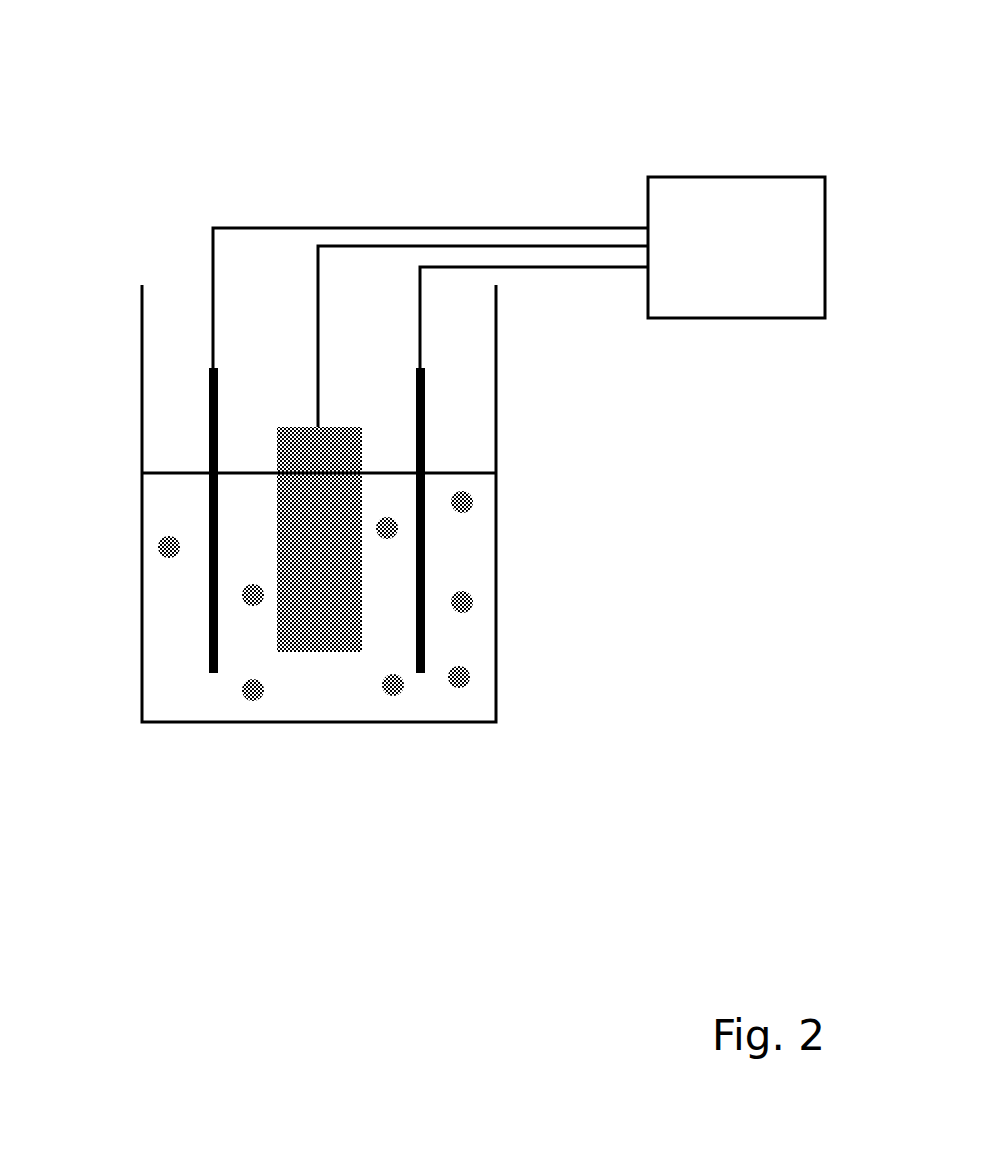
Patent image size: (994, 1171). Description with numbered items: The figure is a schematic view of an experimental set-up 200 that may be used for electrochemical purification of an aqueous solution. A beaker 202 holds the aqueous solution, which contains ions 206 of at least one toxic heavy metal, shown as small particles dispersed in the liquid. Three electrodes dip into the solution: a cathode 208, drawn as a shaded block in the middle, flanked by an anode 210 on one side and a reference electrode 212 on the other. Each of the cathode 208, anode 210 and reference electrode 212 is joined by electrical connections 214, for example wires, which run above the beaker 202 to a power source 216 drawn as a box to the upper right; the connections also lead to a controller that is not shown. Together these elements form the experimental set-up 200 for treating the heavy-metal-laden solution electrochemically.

The experimental set-up 200 is at (213, 124).
The beaker 202 is at (142, 420).
The ions 206 is at (468, 608).
The cathode 208 is at (318, 607).
The anode 210 is at (209, 607).
The reference electrode 212 is at (423, 548).
The electrical connections 214 is at (470, 268).
The power source 216 is at (762, 202).